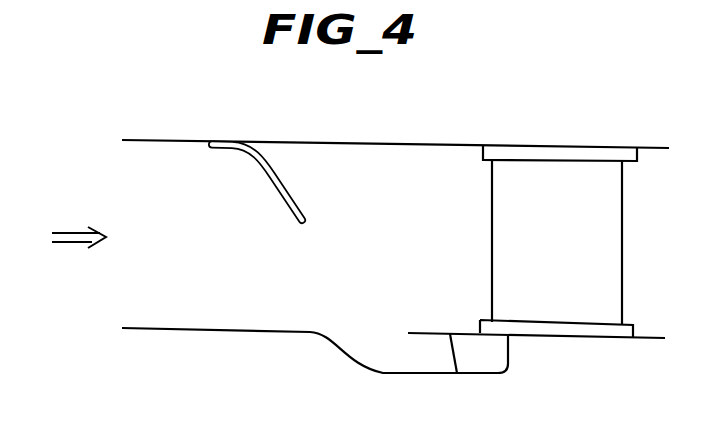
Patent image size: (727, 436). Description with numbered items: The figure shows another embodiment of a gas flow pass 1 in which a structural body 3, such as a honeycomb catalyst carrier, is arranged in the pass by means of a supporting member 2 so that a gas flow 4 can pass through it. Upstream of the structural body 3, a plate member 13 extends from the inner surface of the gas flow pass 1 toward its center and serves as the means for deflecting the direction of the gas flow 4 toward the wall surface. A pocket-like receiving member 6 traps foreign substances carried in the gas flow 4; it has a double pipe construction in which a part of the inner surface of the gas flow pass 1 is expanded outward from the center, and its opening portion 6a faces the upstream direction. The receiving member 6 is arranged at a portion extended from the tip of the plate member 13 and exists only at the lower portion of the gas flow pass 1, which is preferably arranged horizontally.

The gas flow pass 1 is at (466, 142).
The supporting member 2 is at (613, 153).
The structural body 3 is at (613, 259).
The gas flow 4 is at (68, 244).
The receiving member 6 is at (457, 373).
The opening portion 6a is at (407, 356).
The plate member 13 is at (285, 187).